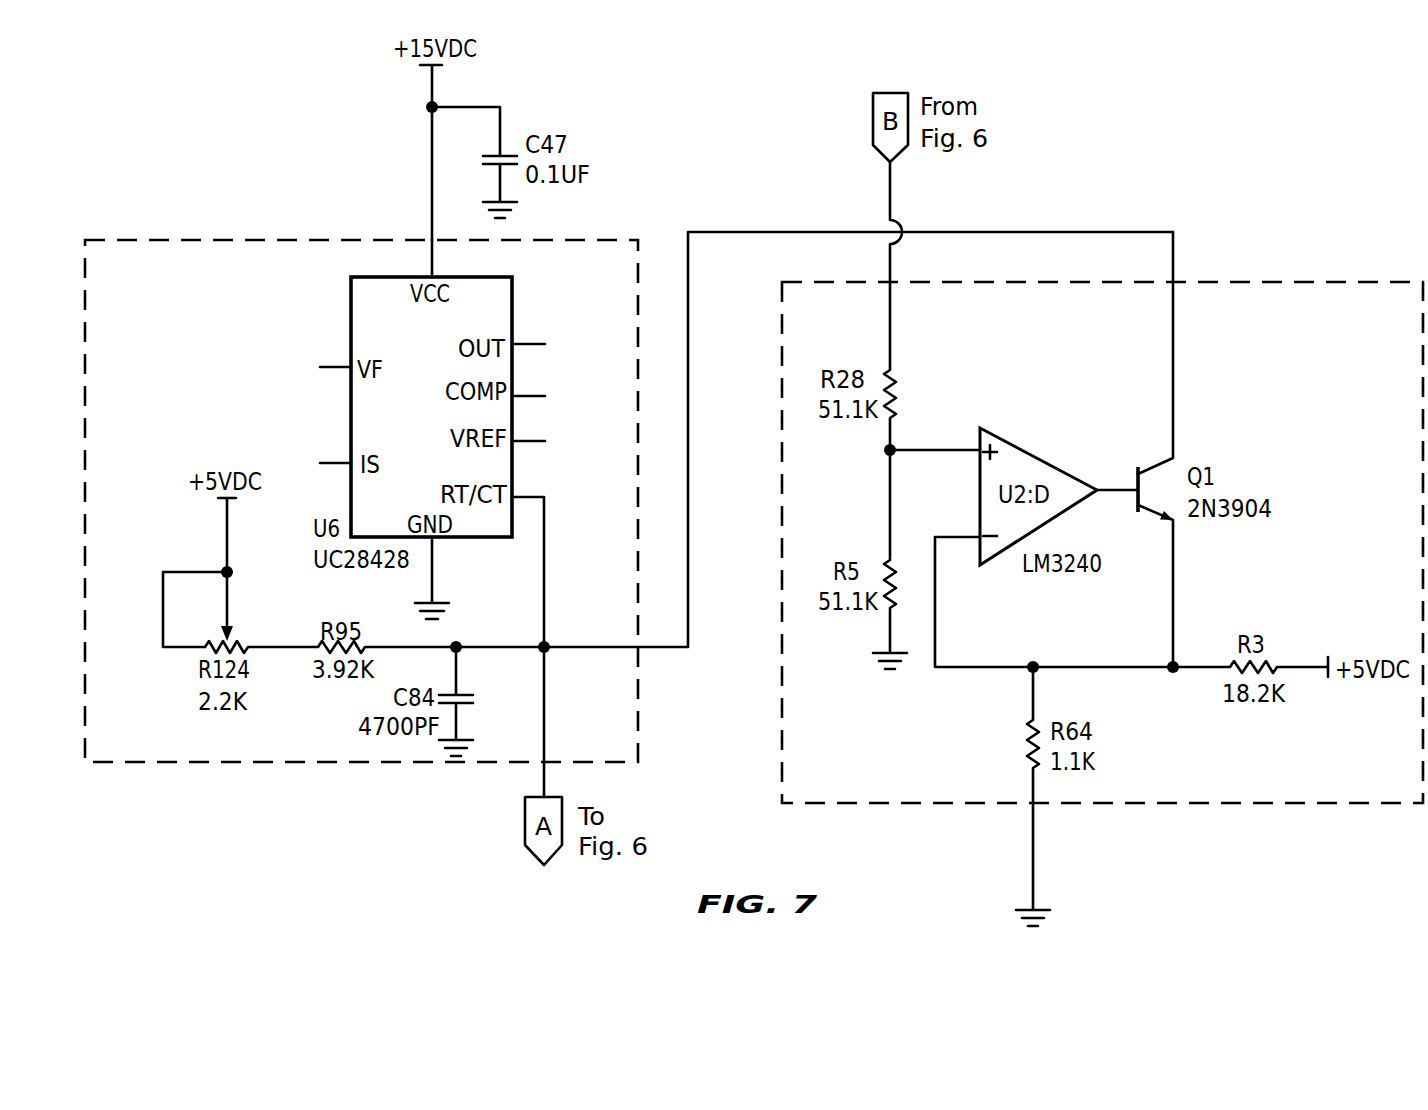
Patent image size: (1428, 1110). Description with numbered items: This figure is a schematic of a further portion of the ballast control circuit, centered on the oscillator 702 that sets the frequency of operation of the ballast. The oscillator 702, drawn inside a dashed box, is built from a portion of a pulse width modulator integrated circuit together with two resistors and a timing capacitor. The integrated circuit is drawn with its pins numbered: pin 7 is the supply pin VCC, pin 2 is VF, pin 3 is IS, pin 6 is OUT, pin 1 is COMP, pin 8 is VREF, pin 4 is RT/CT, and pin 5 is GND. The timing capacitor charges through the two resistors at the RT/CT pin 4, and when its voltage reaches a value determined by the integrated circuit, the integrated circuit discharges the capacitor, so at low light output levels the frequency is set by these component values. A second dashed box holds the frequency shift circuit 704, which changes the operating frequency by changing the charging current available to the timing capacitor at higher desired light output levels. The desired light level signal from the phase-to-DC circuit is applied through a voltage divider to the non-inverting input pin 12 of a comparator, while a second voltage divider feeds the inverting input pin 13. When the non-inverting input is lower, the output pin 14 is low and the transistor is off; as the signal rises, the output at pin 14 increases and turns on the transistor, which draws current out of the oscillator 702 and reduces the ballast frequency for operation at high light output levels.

The oscillator 702 is at (140, 276).
The frequency shift circuit 704 is at (1415, 317).
The COMP pin of U6 / terminal 1 of R124 1 is at (367, 505).
The VF pin of U6 / terminal 2 of R124 2 is at (278, 470).
The IS pin of U6 / terminal 3 of R124 3 is at (304, 540).
The RT/CT pin of U6 4 is at (528, 631).
The GND pin of U6 5 is at (435, 578).
The OUT pin of U6 6 is at (528, 330).
The VCC pin of U6 7 is at (446, 258).
The VREF pin of U6 8 is at (528, 425).
The non-inverting input pin of U2:D 12 is at (935, 437).
The inverting input pin of U2:D 13 is at (984, 587).
The output pin of U2:D 14 is at (1117, 474).